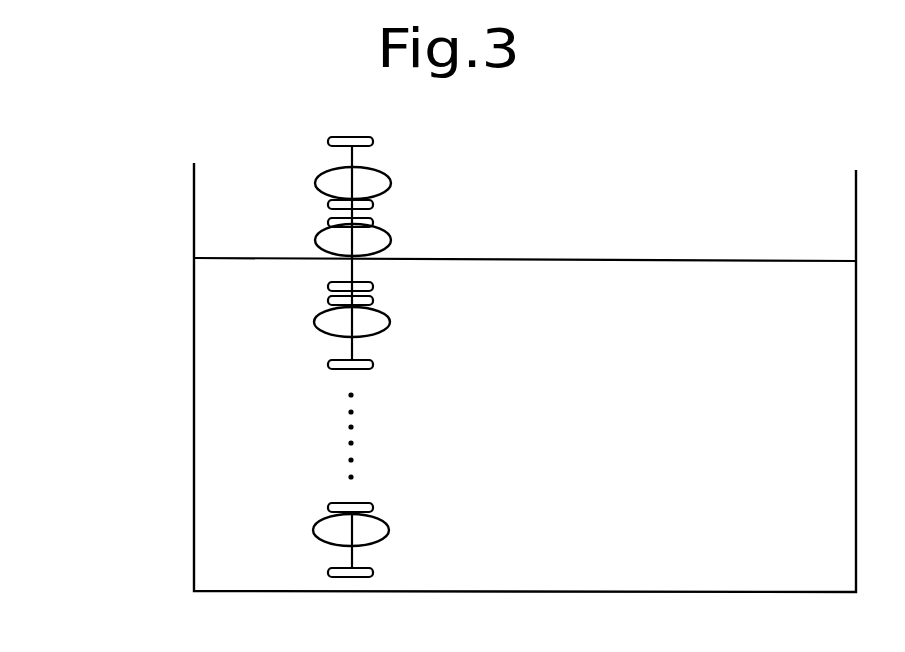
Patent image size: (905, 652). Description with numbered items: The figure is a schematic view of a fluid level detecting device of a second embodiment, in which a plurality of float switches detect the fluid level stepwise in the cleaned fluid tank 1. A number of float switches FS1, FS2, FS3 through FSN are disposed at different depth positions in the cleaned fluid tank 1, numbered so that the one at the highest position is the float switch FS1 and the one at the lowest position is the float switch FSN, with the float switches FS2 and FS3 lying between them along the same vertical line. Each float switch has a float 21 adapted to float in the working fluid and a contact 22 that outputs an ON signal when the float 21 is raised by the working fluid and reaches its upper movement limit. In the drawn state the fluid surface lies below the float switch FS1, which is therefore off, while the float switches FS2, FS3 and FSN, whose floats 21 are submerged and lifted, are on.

The cleaned fluid tank 1 is at (690, 586).
The float 21 is at (378, 185).
The contact 22 is at (372, 137).
The float switch FS1 is at (318, 180).
The float switch FS2 is at (318, 240).
The float switch FS3 is at (316, 322).
The float switch FSN is at (313, 528).